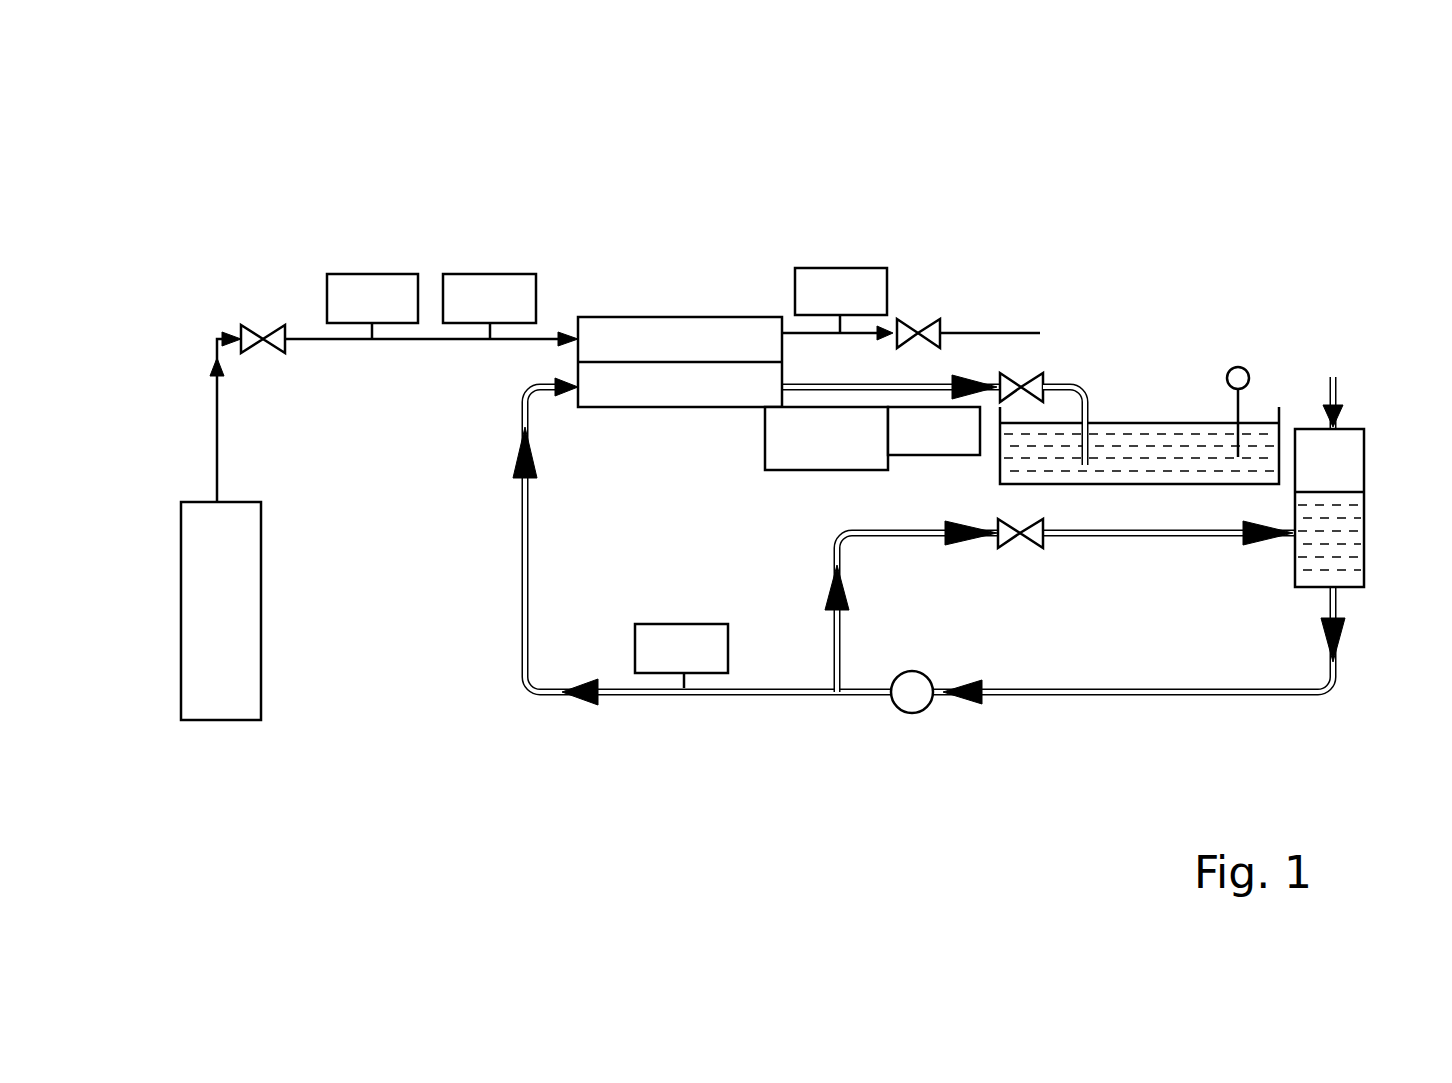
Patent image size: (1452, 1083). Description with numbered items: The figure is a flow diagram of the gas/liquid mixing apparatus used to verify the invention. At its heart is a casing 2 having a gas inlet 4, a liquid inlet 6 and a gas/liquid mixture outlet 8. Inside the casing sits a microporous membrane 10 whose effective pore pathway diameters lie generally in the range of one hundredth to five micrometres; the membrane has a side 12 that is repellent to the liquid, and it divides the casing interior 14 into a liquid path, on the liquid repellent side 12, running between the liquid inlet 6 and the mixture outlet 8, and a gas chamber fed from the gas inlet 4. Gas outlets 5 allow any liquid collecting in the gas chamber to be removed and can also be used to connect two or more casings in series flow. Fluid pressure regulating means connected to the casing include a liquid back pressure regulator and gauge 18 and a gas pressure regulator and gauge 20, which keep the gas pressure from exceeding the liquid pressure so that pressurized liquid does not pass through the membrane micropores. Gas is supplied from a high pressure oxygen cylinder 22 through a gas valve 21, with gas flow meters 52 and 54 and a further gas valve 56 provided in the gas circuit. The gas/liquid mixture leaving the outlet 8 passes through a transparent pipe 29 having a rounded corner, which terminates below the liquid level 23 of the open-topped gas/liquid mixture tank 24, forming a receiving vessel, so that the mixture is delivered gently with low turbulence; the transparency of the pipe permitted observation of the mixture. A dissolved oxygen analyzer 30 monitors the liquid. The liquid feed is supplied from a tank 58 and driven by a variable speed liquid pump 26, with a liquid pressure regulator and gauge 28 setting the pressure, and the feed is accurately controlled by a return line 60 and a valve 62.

The casing 2 is at (606, 316).
The gas inlet 4 is at (578, 342).
The gas outlet 5 is at (797, 330).
The liquid inlet 6 is at (566, 362).
The gas/liquid mixture outlet 8 is at (782, 382).
The microporous membrane 10 is at (675, 362).
The liquid repellent side 12 is at (716, 364).
The casing interior 14 is at (641, 382).
The liquid back pressure regulator and gauge 18 is at (922, 432).
The gas pressure regulator and gauge 20 is at (470, 287).
The gas valve 21 is at (242, 326).
The high pressure oxygen cylinder 22 is at (205, 512).
The liquid level 23 is at (1123, 423).
The gas/liquid mixture tank 24 is at (1197, 304).
The variable speed liquid pump 26 is at (892, 704).
The liquid pressure regulator and gauge 28 is at (662, 660).
The pipe 29 is at (1068, 385).
The dissolved oxygen analyzer 30 is at (788, 425).
The gas flow meter 52 is at (355, 290).
The gas flow meter 54 is at (850, 282).
The gas valve 56 is at (908, 325).
The tank 58 is at (1335, 448).
The return line 60 is at (835, 636).
The valve 62 is at (1041, 552).